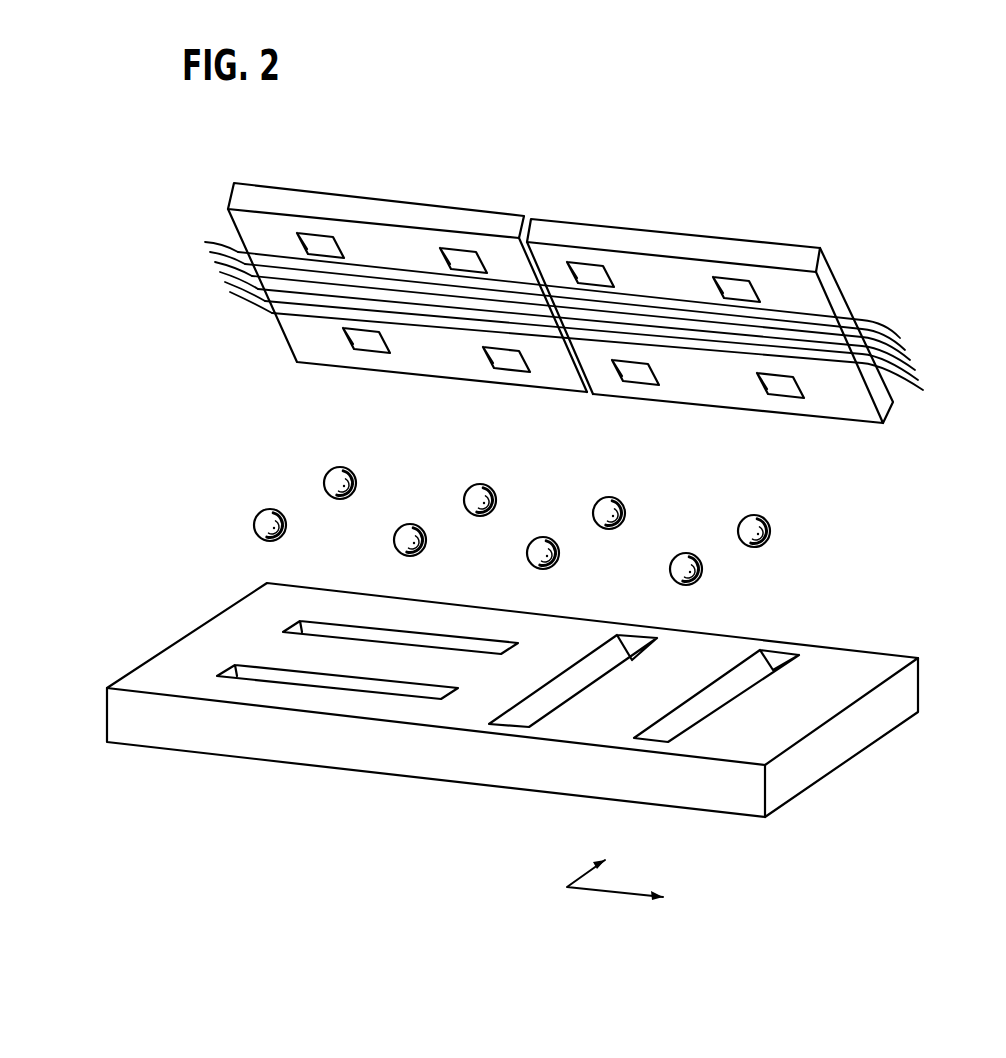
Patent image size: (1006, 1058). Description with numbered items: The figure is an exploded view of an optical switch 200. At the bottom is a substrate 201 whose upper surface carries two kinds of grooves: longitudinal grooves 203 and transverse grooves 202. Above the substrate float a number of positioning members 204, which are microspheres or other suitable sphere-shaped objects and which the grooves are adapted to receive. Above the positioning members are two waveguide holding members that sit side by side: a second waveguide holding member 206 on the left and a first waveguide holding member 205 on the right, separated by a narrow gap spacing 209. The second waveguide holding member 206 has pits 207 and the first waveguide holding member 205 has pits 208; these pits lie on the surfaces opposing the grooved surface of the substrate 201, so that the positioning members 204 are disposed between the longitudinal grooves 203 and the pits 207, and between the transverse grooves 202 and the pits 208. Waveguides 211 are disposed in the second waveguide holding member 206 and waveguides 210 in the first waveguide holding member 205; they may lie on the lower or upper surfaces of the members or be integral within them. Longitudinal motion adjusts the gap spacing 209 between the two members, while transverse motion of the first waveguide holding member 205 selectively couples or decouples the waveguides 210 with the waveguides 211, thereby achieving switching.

The optical switch 200 is at (966, 228).
The substrate 201 is at (885, 698).
The transverse grooves 202 is at (600, 663).
The longitudinal grooves 203 is at (238, 664).
The positioning members 204 is at (273, 510).
The first waveguide holding member 205 is at (688, 235).
The second waveguide holding member 206 is at (470, 215).
The pits 207 is at (310, 248).
The pits 208 is at (593, 270).
The gap spacing 209 is at (532, 218).
The waveguides 210 is at (877, 328).
The waveguides 211 is at (210, 242).